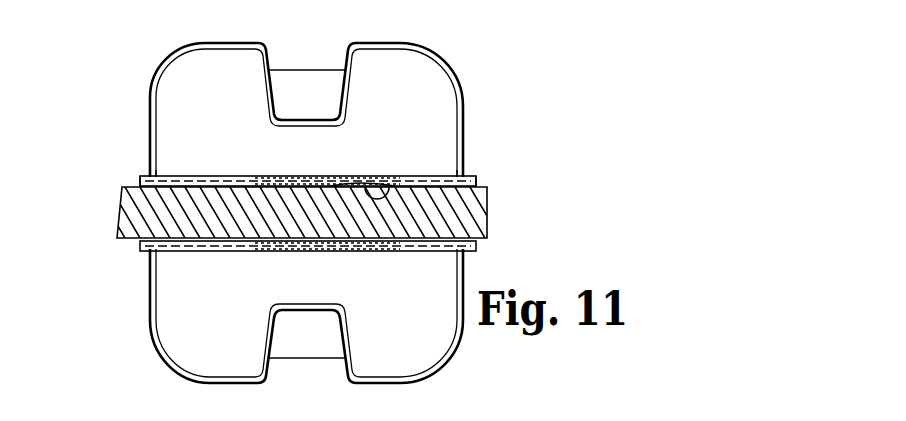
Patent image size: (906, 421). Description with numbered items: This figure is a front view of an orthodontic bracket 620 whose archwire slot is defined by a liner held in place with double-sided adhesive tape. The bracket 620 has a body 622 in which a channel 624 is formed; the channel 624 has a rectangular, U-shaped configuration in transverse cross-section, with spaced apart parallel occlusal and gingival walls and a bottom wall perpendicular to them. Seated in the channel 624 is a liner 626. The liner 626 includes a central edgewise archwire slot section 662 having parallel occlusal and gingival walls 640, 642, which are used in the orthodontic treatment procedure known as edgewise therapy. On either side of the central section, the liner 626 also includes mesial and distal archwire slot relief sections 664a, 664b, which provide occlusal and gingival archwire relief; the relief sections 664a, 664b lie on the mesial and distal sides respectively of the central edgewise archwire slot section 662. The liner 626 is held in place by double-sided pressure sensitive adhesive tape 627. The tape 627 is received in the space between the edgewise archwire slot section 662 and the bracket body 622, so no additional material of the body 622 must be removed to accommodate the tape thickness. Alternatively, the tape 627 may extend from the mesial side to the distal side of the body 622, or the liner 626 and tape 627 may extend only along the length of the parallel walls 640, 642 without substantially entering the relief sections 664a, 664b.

The bracket 620 is at (465, 67).
The body 622 is at (477, 116).
The channel 624 is at (403, 183).
The liner 626 is at (207, 165).
The double-sided pressure sensitive adhesive tape 627 is at (303, 176).
The occlusal wall 640 is at (332, 180).
The gingival wall 642 is at (323, 252).
The central edgewise archwire slot section 662 is at (350, 252).
The mesial archwire slot relief section 664a is at (168, 178).
The distal archwire slot relief section 664b is at (447, 178).